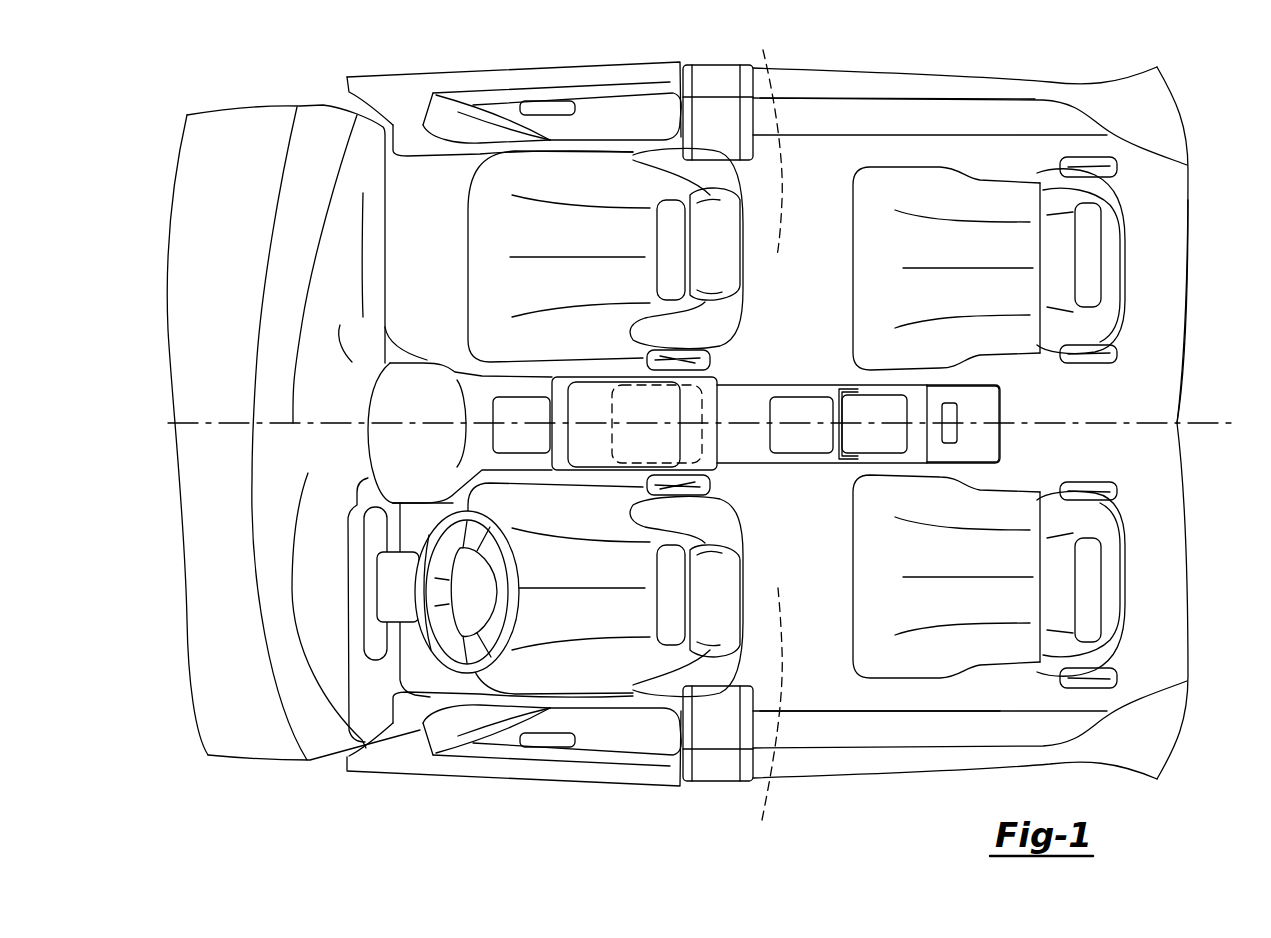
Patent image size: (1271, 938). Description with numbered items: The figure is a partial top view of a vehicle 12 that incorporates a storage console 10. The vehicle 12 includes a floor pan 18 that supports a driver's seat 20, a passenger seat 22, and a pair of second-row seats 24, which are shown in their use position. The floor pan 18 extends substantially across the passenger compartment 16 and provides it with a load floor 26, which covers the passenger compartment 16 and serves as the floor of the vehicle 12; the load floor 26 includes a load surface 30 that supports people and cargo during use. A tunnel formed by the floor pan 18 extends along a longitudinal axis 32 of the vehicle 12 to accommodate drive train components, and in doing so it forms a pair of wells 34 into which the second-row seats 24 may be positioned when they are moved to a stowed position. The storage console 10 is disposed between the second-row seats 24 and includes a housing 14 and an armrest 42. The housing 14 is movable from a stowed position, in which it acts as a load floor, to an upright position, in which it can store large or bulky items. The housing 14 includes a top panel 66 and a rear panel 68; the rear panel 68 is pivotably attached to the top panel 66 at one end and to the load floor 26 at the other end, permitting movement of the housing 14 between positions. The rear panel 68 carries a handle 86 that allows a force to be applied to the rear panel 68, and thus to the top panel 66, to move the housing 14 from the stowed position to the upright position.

The storage console 10 is at (727, 423).
The vehicle 12 is at (877, 70).
The housing 14 is at (901, 453).
The passenger compartment 16 is at (803, 687).
The floor pan 18 is at (820, 677).
The driver's seat 20 is at (580, 672).
The passenger seat 22 is at (582, 192).
The second-row seats 24 is at (983, 200).
The load floor 26 is at (828, 153).
The load surface 30 is at (830, 262).
The longitudinal axis 32 is at (1198, 423).
The wells 34 is at (768, 433).
The armrest 42 is at (632, 408).
The top panel 66 is at (735, 403).
The rear panel 68 is at (993, 450).
The handle 86 is at (952, 417).